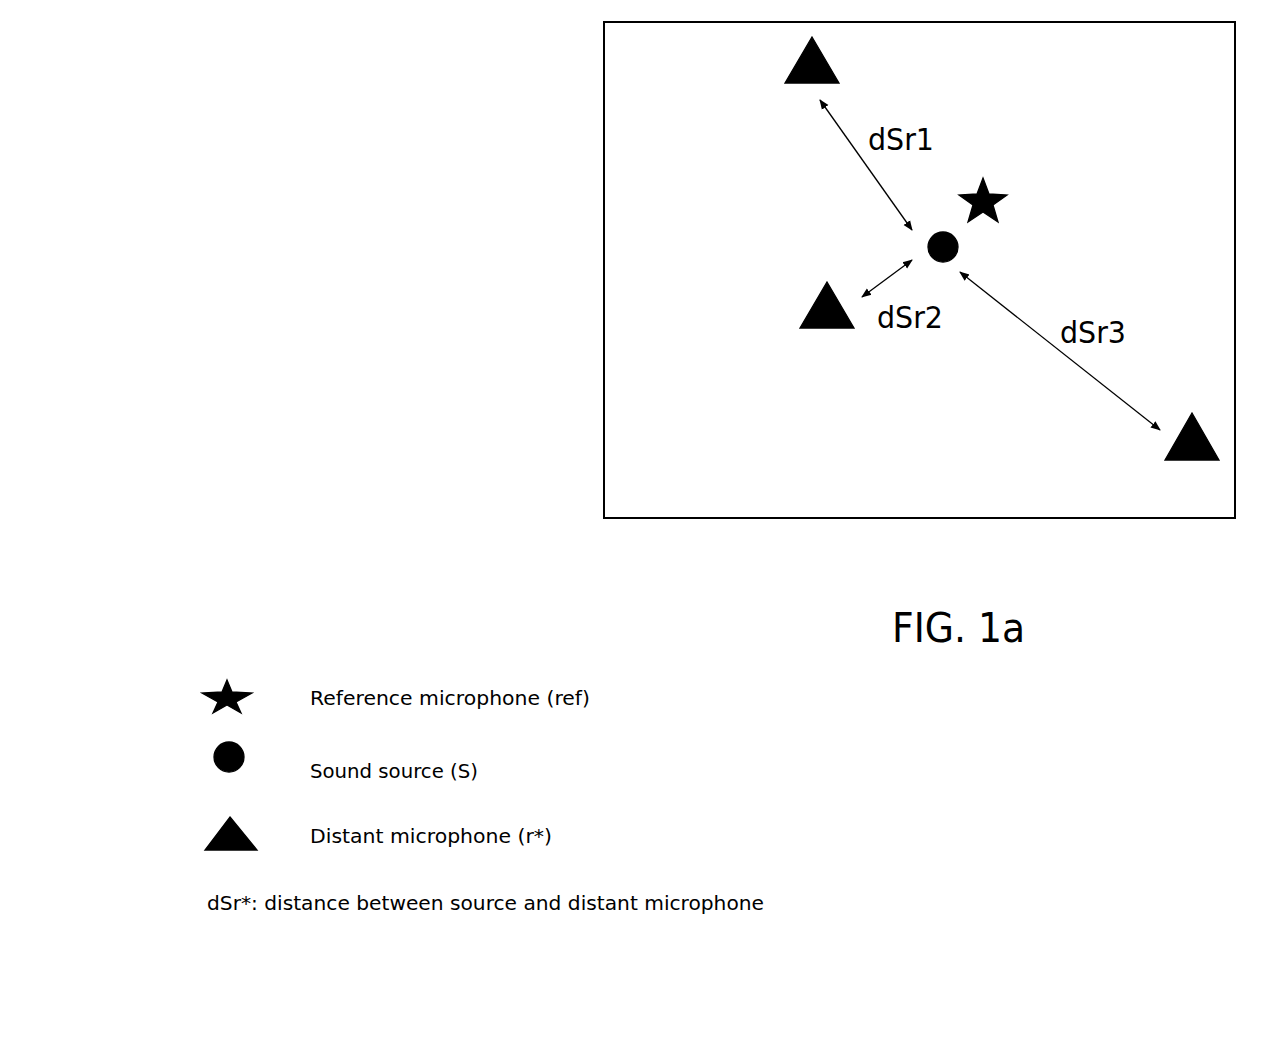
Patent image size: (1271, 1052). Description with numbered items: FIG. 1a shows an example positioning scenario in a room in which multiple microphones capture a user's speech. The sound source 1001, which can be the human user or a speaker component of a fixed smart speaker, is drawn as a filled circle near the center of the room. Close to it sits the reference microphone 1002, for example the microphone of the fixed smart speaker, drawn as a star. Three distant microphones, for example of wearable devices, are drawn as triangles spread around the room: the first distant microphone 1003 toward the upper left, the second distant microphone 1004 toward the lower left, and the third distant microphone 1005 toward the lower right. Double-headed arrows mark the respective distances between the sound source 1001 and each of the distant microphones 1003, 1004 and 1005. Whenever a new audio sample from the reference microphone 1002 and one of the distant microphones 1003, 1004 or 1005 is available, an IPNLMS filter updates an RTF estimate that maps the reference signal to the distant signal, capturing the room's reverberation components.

The sound source S 1001 is at (993, 255).
The reference microphone ref 1002 is at (1037, 190).
The distant microphone r1 1003 is at (776, 57).
The distant microphone r2 1004 is at (790, 325).
The distant microphone r3 1005 is at (1156, 461).